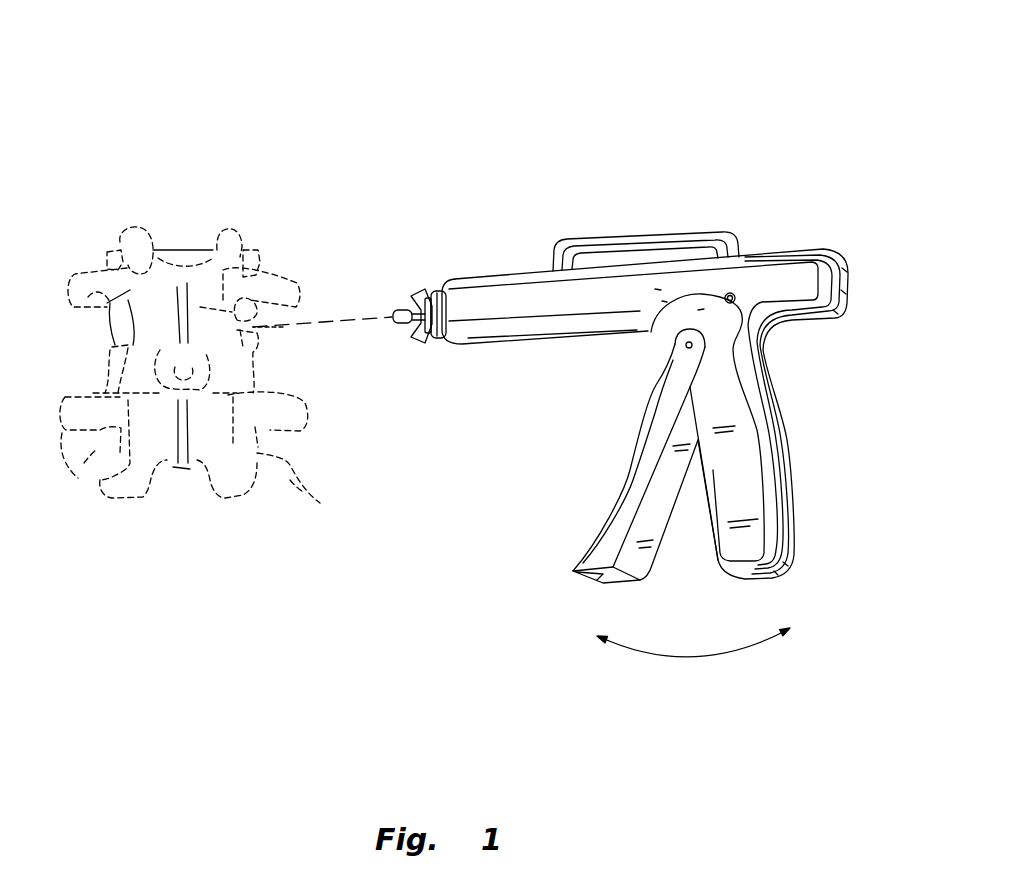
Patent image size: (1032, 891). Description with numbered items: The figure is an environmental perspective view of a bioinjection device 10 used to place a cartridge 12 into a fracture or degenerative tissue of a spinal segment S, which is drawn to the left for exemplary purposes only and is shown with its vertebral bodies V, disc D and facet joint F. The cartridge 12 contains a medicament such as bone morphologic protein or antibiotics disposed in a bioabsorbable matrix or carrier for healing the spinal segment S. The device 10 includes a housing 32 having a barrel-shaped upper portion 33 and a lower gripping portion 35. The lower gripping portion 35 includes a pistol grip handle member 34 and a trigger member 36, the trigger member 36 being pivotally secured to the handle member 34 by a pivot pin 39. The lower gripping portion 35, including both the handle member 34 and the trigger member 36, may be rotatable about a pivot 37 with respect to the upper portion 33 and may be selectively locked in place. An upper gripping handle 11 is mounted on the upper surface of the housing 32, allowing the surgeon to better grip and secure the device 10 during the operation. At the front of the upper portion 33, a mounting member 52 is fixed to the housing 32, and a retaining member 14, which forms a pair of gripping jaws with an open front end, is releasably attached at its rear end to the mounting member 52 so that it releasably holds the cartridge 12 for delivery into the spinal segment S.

The bioinjection device 10 is at (624, 344).
The upper gripping handle 11 is at (601, 242).
The cartridge 12 is at (402, 322).
The retaining member 14 is at (420, 294).
The housing 32 is at (818, 268).
The barrel-shaped upper portion 33 is at (810, 218).
The pistol grip handle member 34 is at (768, 470).
The lower gripping portion 35 is at (810, 576).
The trigger member 36 is at (636, 497).
The pivot 37 is at (731, 294).
The pivot pin 39 is at (683, 348).
The mounting member 52 is at (442, 334).
The spinal segment S is at (243, 243).
The facet joint F is at (270, 334).
The disc D is at (84, 463).
The vertebral bodies V is at (300, 490).